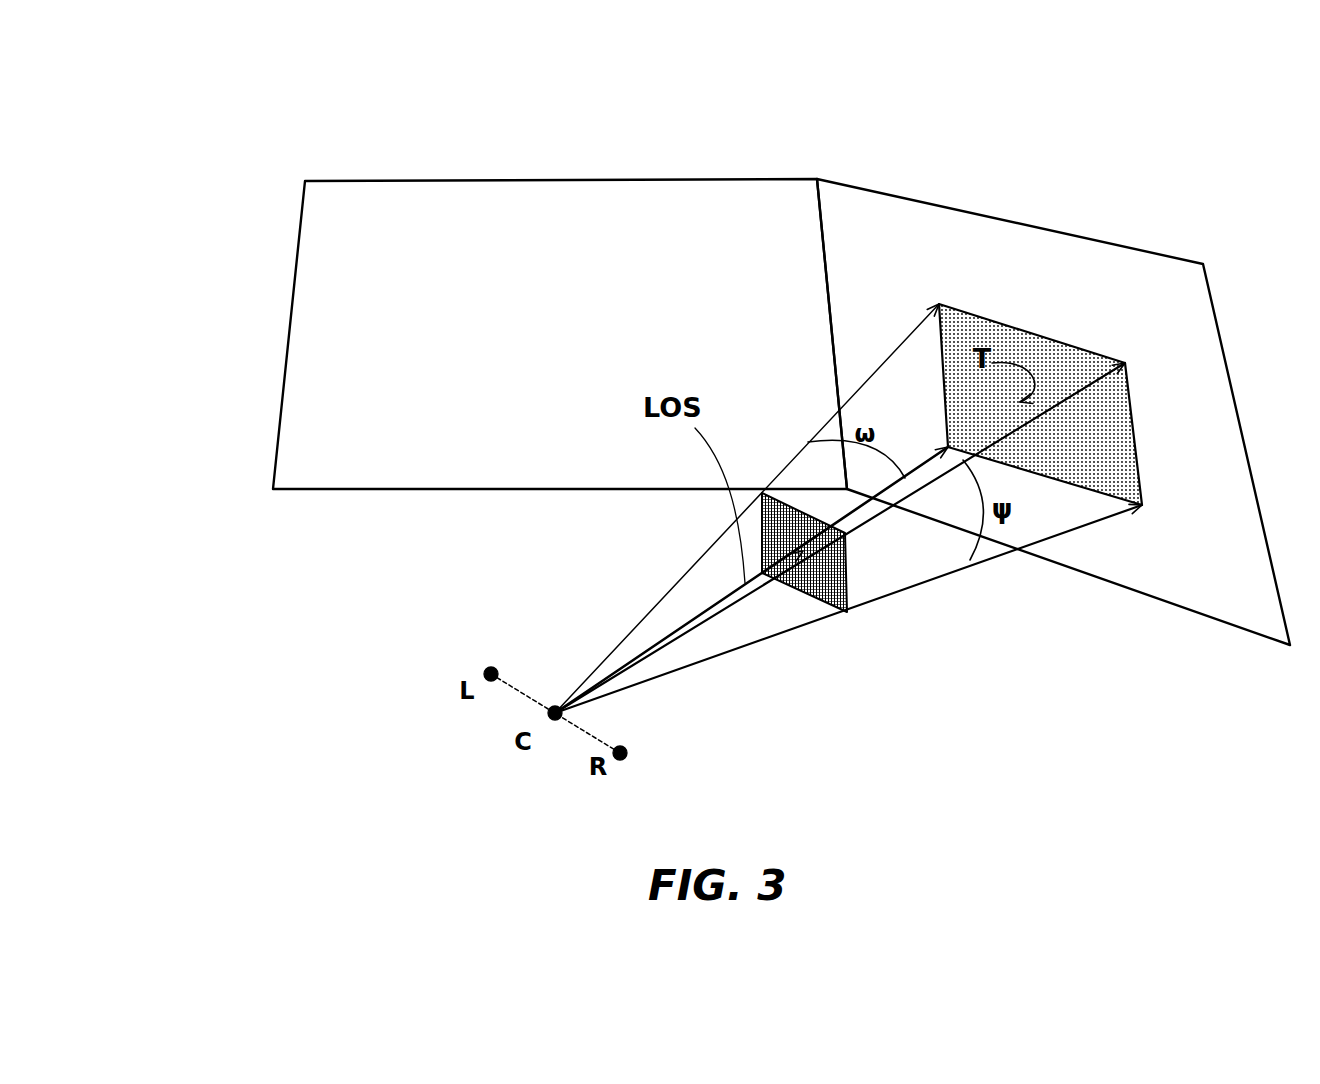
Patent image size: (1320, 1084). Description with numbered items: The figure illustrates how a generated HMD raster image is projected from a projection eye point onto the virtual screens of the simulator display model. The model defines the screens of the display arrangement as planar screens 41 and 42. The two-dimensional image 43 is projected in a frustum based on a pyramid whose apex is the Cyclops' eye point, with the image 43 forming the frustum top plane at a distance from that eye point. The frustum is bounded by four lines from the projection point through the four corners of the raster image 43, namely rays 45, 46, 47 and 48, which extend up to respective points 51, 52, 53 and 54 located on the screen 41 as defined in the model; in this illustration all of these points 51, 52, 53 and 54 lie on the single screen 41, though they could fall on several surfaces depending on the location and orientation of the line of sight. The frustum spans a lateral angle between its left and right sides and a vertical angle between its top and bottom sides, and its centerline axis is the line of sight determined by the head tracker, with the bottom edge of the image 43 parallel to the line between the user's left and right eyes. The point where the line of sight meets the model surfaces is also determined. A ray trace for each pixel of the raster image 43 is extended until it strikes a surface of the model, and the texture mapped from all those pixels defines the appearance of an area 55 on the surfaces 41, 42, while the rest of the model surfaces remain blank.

The planar screen 41 is at (1162, 578).
The planar screen 42 is at (359, 373).
The 2D image 43 is at (825, 610).
The ray 45 is at (642, 618).
The ray 46 is at (713, 605).
The ray 47 is at (748, 595).
The ray 48 is at (927, 585).
The point 51 is at (937, 302).
The point 52 is at (947, 442).
The point 53 is at (1127, 361).
The point 54 is at (1148, 510).
The area 55 is at (1002, 325).